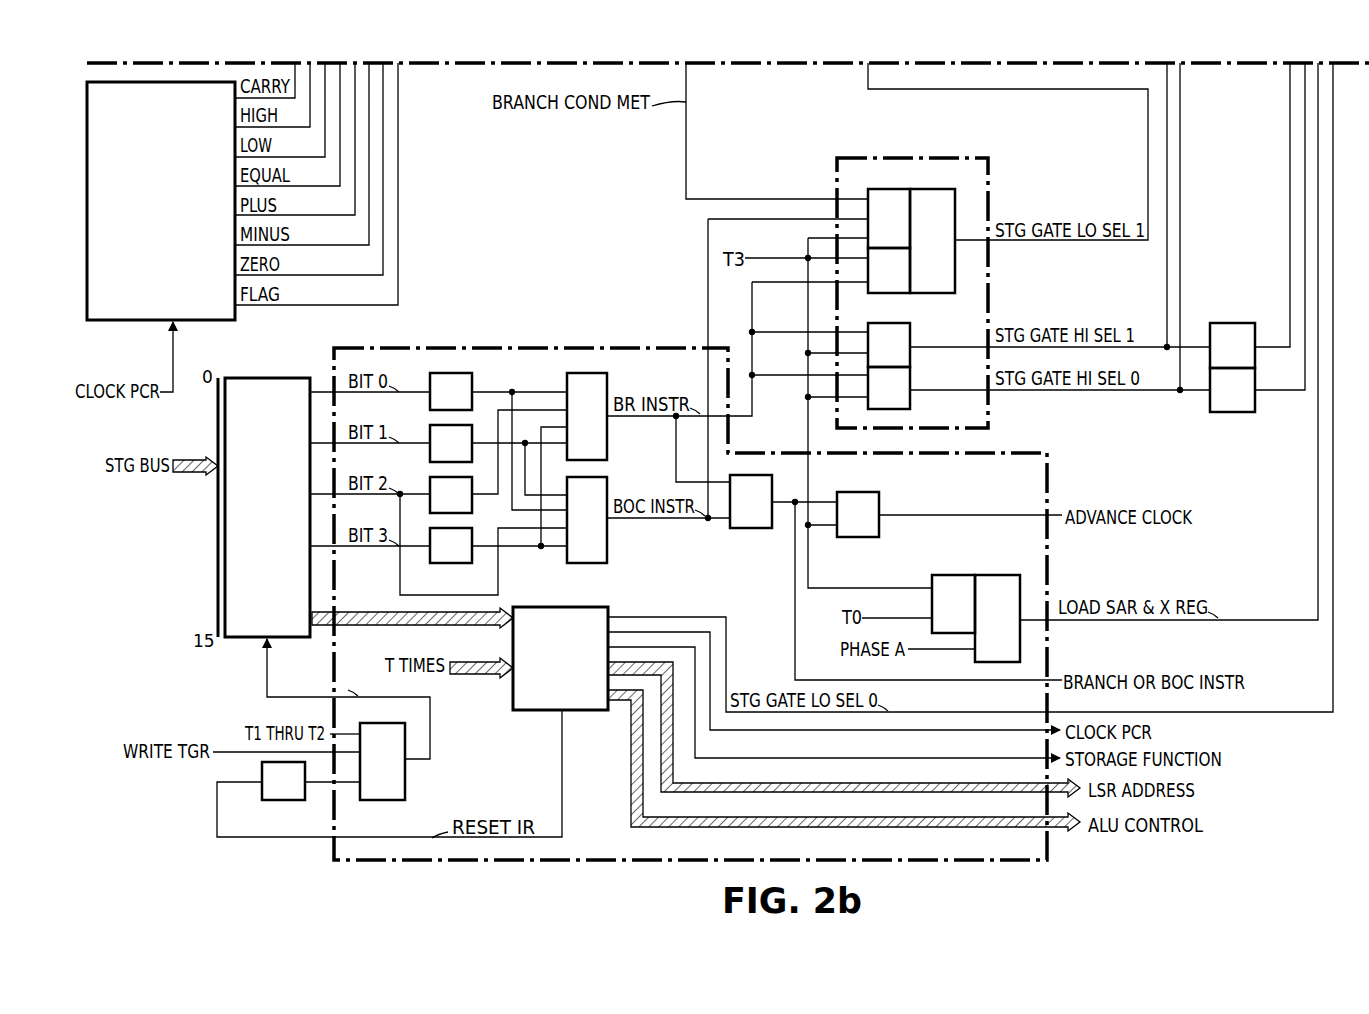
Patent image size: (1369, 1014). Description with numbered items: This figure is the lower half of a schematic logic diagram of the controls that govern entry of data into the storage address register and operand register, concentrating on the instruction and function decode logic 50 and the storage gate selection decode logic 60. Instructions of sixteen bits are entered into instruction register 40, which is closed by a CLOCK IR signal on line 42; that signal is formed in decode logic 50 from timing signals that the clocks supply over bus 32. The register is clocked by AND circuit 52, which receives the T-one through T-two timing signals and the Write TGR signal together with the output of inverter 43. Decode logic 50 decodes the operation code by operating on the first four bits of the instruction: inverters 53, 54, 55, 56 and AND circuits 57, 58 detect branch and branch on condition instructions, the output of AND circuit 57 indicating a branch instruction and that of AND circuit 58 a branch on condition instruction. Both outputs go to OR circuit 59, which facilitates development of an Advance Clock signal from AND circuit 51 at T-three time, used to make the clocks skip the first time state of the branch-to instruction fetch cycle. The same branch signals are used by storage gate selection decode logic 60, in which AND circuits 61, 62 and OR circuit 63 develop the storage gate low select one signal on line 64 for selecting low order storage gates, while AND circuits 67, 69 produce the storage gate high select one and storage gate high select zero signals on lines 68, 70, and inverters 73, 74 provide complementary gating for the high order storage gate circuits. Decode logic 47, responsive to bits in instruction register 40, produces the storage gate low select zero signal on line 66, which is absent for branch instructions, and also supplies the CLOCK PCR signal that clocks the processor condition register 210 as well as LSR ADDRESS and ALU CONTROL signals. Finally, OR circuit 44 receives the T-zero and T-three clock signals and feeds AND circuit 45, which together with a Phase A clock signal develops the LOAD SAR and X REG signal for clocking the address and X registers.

The processor condition register 210 is at (170, 264).
The instruction register 40 is at (278, 420).
The inverter 53 is at (474, 381).
The inverter 54 is at (432, 432).
The inverter 55 is at (432, 484).
The inverter 56 is at (435, 563).
The AND circuit 57 is at (601, 386).
The AND circuit 58 is at (601, 486).
The OR circuit 59 is at (738, 528).
The decode logic 47 is at (540, 612).
The bus 32 is at (462, 667).
The line 42 is at (430, 712).
The AND circuit 52 is at (397, 791).
The inverter 43 is at (262, 800).
The storage gate selection decode logic 60 is at (995, 180).
The AND circuit 61 is at (890, 195).
The AND circuit 62 is at (872, 290).
The OR circuit 63 is at (944, 196).
The line 64 is at (1128, 87).
The AND circuit 67 is at (912, 332).
The line 68 is at (977, 346).
The AND circuit 69 is at (908, 381).
The line 70 is at (946, 391).
The inverter 73 is at (1222, 327).
The inverter 74 is at (1245, 414).
The instruction and function decode logic 50 is at (1052, 469).
The AND circuit 51 is at (858, 539).
The OR circuit 44 is at (941, 579).
The AND circuit 45 is at (993, 579).
The line 66 is at (1333, 631).